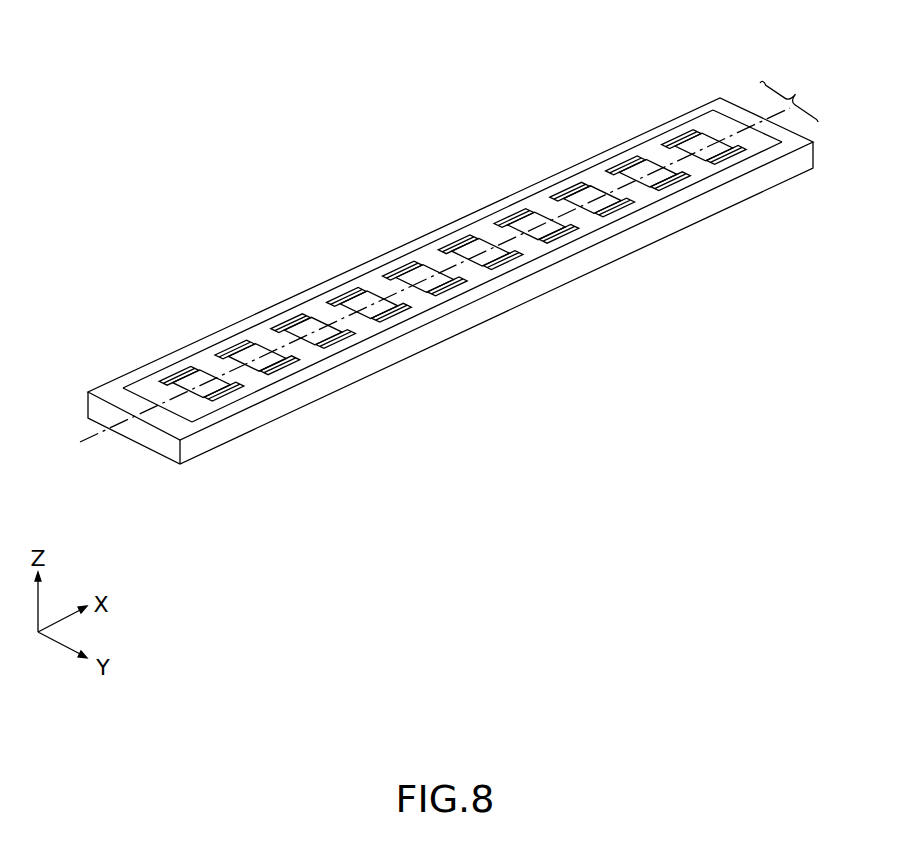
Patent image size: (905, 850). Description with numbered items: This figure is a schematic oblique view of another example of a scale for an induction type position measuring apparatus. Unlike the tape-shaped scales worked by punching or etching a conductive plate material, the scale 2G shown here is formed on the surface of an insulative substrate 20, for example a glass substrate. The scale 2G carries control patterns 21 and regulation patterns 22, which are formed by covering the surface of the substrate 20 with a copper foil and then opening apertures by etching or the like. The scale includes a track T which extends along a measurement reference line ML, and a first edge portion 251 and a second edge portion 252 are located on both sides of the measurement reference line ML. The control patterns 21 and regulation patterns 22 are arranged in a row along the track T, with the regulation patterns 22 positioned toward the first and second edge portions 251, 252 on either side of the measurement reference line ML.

The insulative substrate 20 is at (197, 454).
The control patterns 21 is at (230, 384).
The regulation patterns 22 is at (170, 372).
The first edge portion 251 is at (203, 348).
The second edge portion 252 is at (319, 372).
The scale 2G is at (437, 222).
The track T is at (792, 92).
The measurement reference line ML is at (416, 287).